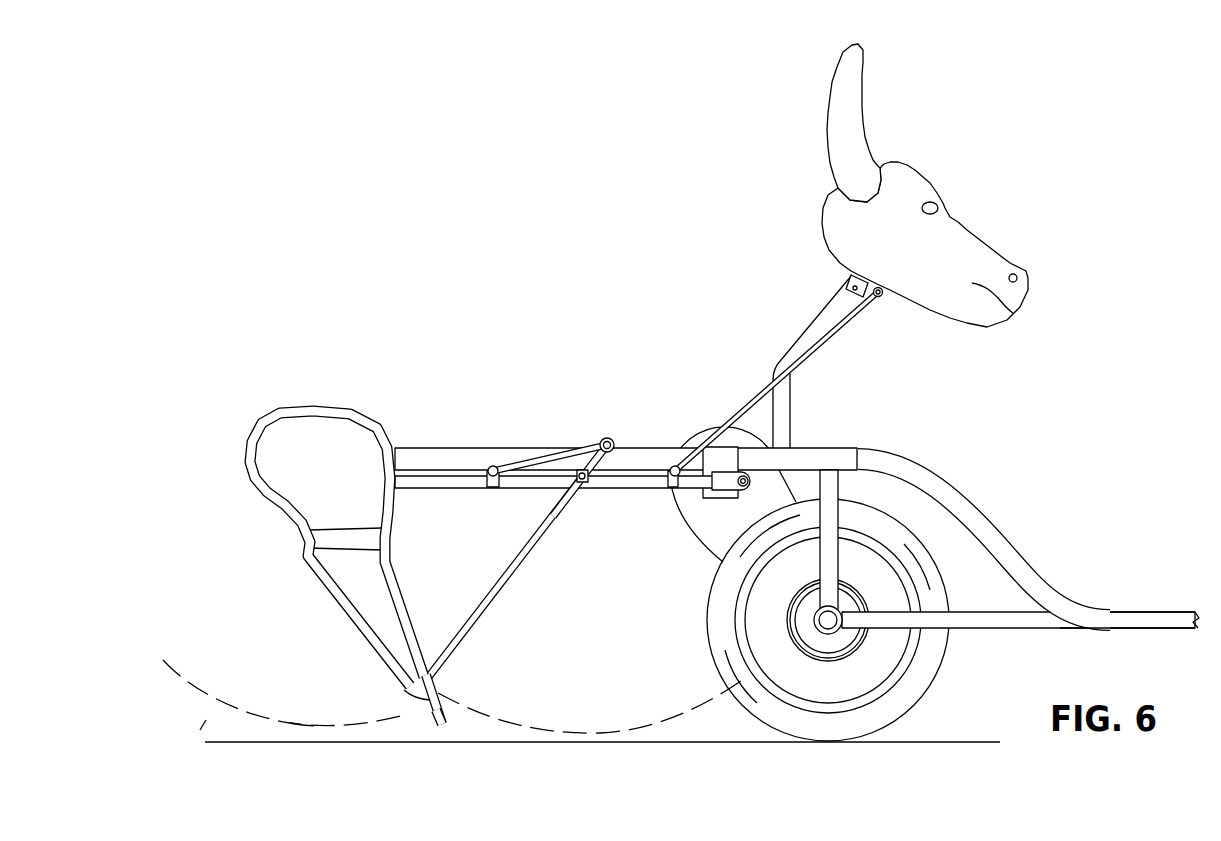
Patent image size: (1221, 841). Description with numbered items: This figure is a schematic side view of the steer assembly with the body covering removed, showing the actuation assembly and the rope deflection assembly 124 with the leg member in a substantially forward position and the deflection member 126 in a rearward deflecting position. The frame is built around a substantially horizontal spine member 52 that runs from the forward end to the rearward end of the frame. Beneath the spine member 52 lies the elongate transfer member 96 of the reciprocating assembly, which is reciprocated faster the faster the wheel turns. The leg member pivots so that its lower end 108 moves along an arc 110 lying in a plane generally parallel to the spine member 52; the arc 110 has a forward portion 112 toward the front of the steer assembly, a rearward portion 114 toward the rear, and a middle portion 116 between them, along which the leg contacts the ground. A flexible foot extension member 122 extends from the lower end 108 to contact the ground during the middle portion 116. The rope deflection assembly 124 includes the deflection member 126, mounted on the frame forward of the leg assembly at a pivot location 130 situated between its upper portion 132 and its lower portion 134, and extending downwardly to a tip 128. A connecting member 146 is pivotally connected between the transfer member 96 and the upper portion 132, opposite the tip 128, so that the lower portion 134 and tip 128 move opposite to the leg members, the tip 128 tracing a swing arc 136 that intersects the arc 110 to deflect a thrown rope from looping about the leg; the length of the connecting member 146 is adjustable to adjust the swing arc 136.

The spine member 52 is at (420, 452).
The transfer member 96 is at (415, 482).
The lower end of leg member 108 is at (420, 697).
The arc of leg lower end movement 110 is at (200, 730).
The forward portion of the arc 112 is at (410, 718).
The rearward portion of the arc 114 is at (200, 685).
The middle portion of the arc 116 is at (305, 723).
The foot extension member 122 is at (428, 722).
The rope deflection assembly 124 is at (562, 536).
The deflection member 126 is at (492, 590).
The tip of deflection member 128 is at (430, 673).
The pivot location 130 is at (580, 474).
The upper portion of deflection member 132 is at (612, 455).
The lower portion of deflection member 134 is at (563, 498).
The swing arc 136 is at (657, 727).
The connecting member 146 is at (540, 457).